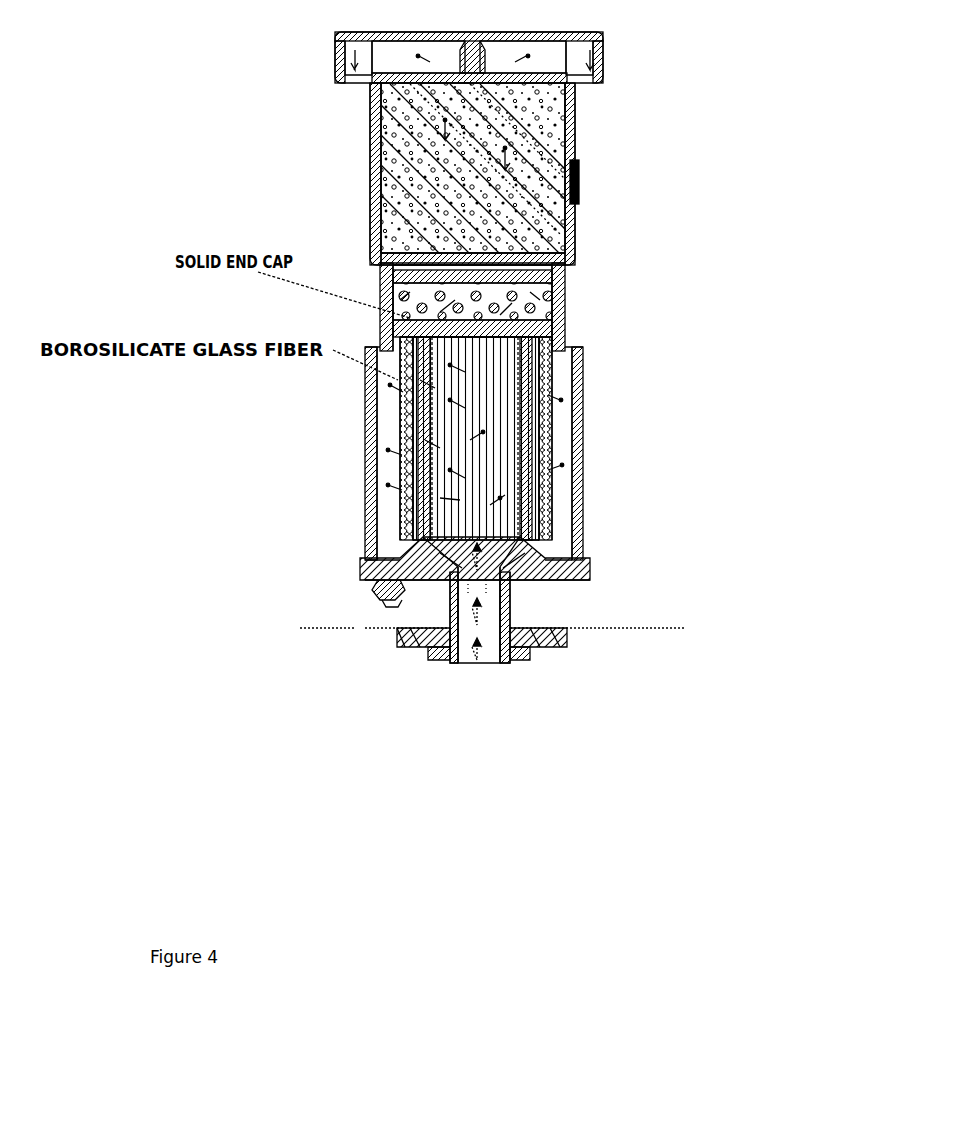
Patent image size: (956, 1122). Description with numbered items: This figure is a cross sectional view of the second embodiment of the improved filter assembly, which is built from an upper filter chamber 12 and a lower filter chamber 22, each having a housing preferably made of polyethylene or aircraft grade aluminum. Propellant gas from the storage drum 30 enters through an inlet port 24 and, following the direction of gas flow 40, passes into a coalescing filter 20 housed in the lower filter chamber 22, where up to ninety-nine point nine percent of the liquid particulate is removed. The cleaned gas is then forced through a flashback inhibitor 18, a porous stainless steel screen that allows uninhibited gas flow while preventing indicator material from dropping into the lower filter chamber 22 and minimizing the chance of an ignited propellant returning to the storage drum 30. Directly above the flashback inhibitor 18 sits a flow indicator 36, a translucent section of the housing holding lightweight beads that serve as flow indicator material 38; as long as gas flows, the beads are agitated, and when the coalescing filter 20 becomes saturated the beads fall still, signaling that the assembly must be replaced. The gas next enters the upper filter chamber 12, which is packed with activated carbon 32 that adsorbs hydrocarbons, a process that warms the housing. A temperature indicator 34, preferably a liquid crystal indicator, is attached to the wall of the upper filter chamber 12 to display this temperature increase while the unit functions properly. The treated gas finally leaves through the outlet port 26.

The upper filter chamber 12 is at (305, 157).
The activated carbon 32 is at (505, 193).
The temperature indicator 34 is at (580, 185).
The flow indicator material 38 is at (565, 290).
The flow indicator 36 is at (566, 305).
The flashback inhibitor 18 is at (560, 330).
The direction of gas flow 40 is at (455, 407).
The coalescing filter 20 is at (405, 421).
The lower filter chamber 22 is at (337, 493).
The storage drum 30 is at (350, 676).
The inlet port 24 is at (497, 616).
The outlet port 26 is at (520, 650).